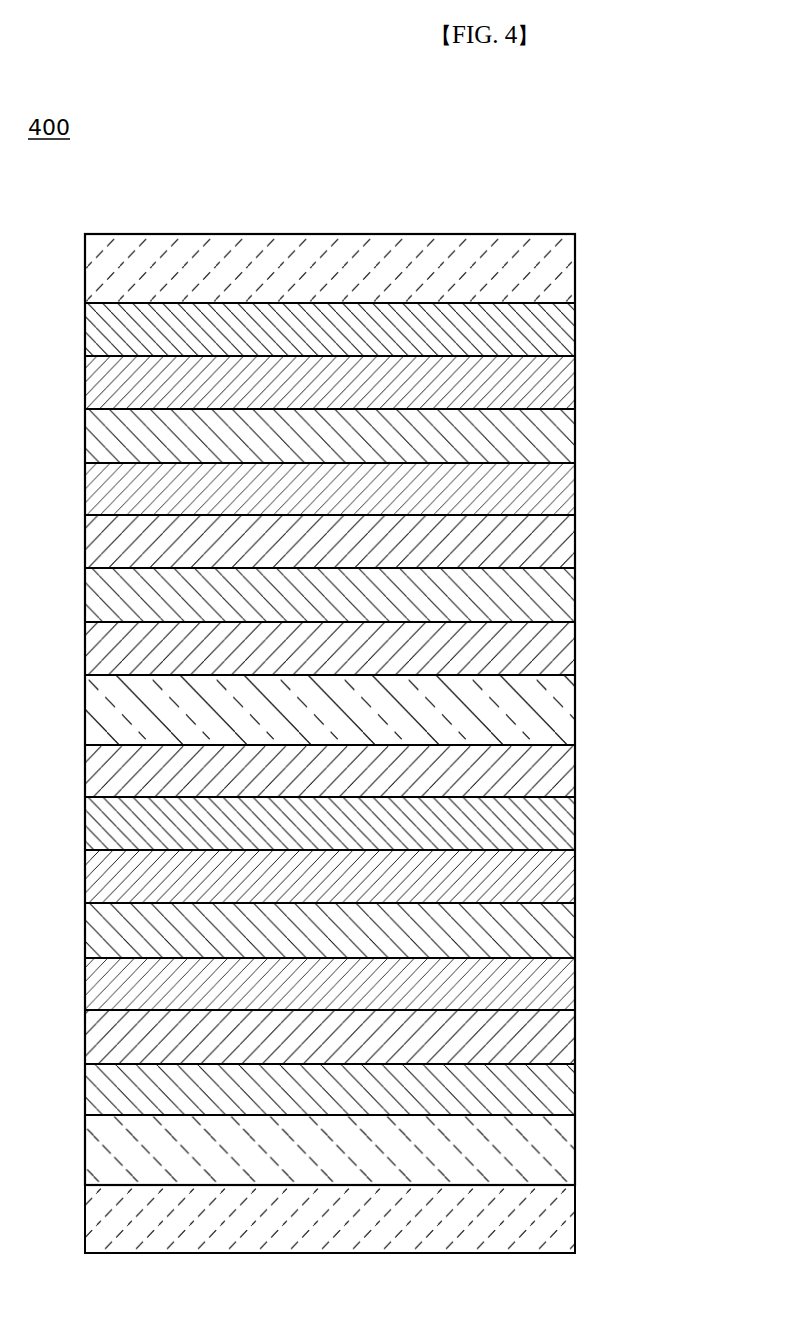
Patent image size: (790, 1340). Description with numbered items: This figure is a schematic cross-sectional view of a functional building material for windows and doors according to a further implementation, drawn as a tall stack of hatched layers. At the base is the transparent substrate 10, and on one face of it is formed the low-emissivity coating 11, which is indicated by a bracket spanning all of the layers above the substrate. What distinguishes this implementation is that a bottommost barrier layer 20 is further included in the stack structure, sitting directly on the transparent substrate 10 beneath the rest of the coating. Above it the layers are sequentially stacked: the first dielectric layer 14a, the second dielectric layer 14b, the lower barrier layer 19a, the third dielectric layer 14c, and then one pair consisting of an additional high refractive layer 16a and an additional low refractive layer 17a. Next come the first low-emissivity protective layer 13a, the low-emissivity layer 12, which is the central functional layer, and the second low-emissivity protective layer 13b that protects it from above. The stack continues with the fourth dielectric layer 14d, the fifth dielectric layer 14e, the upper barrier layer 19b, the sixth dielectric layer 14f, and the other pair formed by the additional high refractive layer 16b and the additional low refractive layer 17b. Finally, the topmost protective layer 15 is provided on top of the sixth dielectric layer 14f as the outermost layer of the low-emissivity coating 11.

The transparent substrate 10 is at (560, 1221).
The bottommost barrier layer 20 is at (560, 1151).
The low-emissivity coating 11 is at (676, 1149).
The first dielectric layer 14a is at (560, 1091).
The second dielectric layer 14b is at (560, 1039).
The third dielectric layer 14c is at (560, 932).
The fourth dielectric layer 14d is at (560, 597).
The fifth dielectric layer 14e is at (560, 543).
The sixth dielectric layer 14f is at (560, 438).
The lower barrier layer 19a is at (560, 986).
The upper barrier layer 19b is at (560, 491).
The additional high refractive layer 16a is at (560, 878).
The additional high refractive layer 16b is at (560, 384).
The additional low refractive layer 17a is at (560, 825).
The additional low refractive layer 17b is at (560, 331).
The first low-emissivity protective layer 13a is at (560, 773).
The second low-emissivity protective layer 13b is at (560, 650).
The low-emissivity layer 12 is at (560, 712).
The topmost protective layer 15 is at (560, 270).